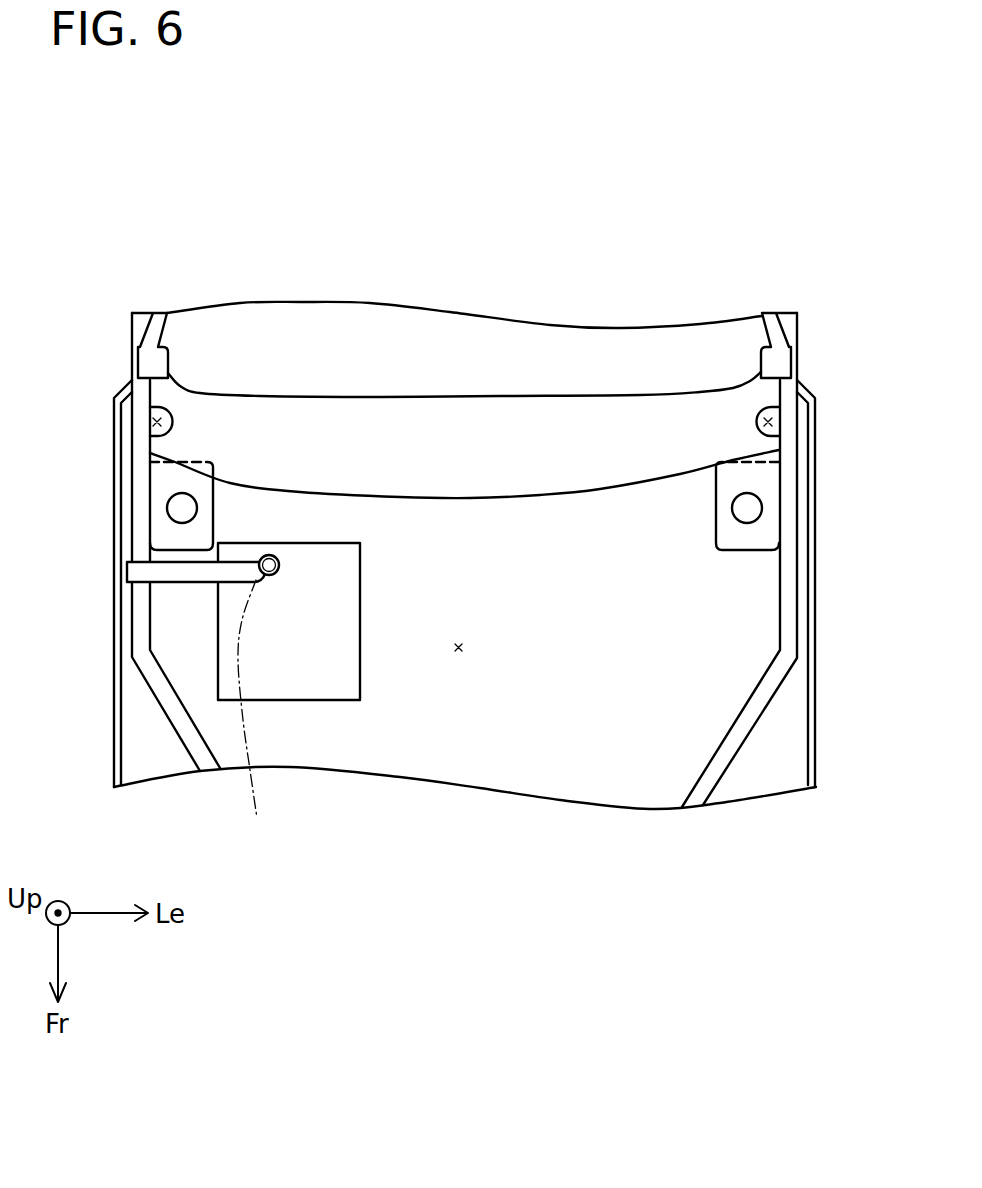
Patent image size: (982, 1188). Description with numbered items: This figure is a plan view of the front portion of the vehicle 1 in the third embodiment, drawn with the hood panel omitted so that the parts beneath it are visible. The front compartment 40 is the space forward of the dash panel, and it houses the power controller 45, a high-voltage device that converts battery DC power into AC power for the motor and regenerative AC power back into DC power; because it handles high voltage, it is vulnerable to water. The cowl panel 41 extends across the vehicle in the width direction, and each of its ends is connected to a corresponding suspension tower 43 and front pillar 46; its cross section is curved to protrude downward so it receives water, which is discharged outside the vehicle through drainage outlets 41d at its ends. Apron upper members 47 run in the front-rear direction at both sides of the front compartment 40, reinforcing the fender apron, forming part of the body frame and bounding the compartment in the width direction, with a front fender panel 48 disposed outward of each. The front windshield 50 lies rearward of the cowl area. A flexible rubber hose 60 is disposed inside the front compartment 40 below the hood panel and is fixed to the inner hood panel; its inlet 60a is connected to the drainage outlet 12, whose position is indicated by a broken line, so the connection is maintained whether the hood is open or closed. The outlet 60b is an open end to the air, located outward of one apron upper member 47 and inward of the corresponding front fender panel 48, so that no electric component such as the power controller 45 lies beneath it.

The vehicle 1 is at (843, 156).
The drainage outlet 12 is at (257, 717).
The front compartment 40 is at (462, 650).
The cowl panel 41 is at (545, 468).
The drainage outlet 41d is at (158, 422).
The suspension tower 43 is at (165, 485).
The power controller 45 is at (300, 662).
The front pillar 46 is at (148, 365).
The apron upper member 47 is at (140, 645).
The front fender panel 48 is at (117, 722).
The front windshield 50 is at (333, 326).
The hose 60 is at (209, 707).
The inlet 60a is at (279, 566).
The outlet 60b is at (127, 573).